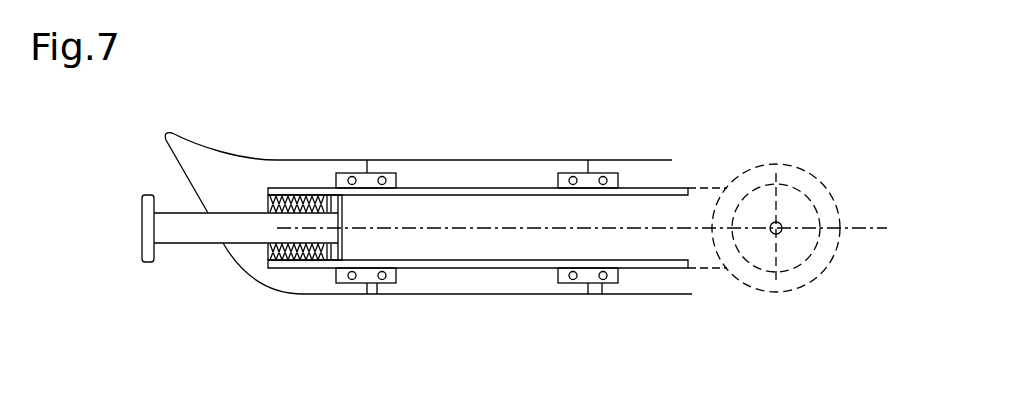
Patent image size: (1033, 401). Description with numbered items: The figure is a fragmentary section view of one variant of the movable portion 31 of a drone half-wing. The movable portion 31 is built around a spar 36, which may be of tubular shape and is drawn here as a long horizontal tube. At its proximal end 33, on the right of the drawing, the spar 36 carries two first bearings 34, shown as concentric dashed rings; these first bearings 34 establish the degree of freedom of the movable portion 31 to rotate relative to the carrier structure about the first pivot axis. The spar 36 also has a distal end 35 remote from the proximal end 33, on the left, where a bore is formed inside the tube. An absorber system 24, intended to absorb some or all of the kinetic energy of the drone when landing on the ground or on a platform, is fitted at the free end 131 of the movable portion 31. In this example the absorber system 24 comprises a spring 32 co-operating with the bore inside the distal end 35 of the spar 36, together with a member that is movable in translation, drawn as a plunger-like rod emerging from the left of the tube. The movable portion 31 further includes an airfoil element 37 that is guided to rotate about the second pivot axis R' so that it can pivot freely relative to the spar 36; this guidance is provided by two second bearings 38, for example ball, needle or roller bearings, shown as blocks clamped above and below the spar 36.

The absorber system 24 is at (150, 220).
The movable portion 31 is at (235, 116).
The free end 131 is at (163, 168).
The spring 32 is at (298, 253).
The proximal end 33 is at (764, 163).
The first bearings 34 is at (812, 253).
The distal end 35 is at (300, 188).
The spar 36 is at (470, 188).
The airfoil element 37 is at (323, 160).
The second bearings 38 is at (377, 294).
The second pivot axis R' is at (877, 194).